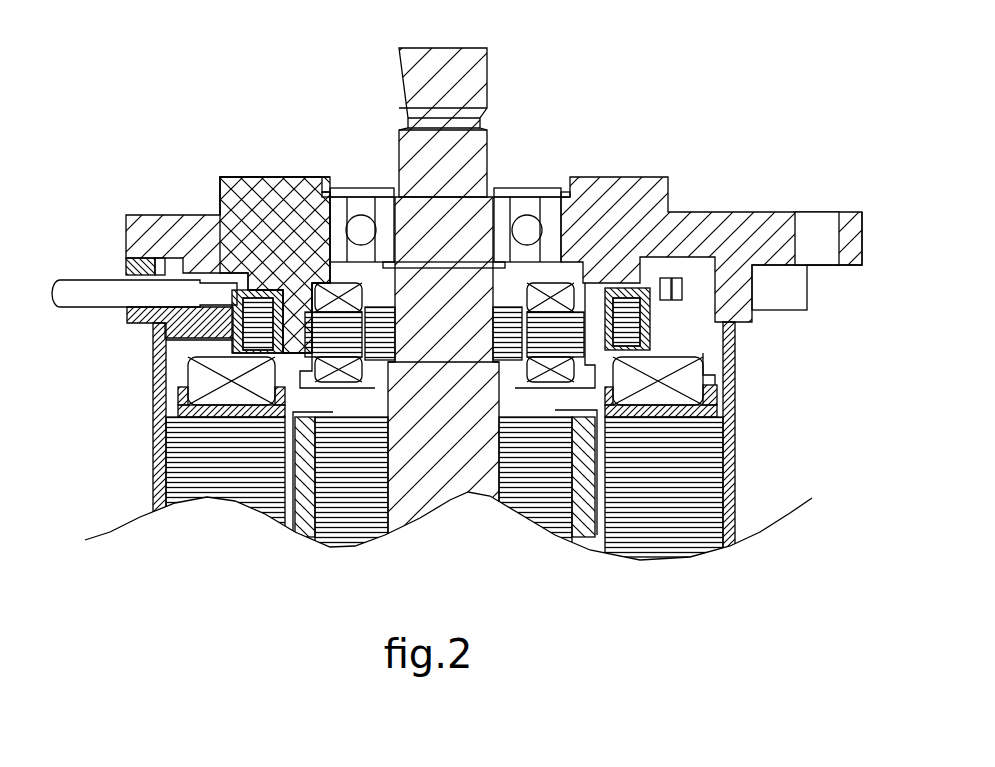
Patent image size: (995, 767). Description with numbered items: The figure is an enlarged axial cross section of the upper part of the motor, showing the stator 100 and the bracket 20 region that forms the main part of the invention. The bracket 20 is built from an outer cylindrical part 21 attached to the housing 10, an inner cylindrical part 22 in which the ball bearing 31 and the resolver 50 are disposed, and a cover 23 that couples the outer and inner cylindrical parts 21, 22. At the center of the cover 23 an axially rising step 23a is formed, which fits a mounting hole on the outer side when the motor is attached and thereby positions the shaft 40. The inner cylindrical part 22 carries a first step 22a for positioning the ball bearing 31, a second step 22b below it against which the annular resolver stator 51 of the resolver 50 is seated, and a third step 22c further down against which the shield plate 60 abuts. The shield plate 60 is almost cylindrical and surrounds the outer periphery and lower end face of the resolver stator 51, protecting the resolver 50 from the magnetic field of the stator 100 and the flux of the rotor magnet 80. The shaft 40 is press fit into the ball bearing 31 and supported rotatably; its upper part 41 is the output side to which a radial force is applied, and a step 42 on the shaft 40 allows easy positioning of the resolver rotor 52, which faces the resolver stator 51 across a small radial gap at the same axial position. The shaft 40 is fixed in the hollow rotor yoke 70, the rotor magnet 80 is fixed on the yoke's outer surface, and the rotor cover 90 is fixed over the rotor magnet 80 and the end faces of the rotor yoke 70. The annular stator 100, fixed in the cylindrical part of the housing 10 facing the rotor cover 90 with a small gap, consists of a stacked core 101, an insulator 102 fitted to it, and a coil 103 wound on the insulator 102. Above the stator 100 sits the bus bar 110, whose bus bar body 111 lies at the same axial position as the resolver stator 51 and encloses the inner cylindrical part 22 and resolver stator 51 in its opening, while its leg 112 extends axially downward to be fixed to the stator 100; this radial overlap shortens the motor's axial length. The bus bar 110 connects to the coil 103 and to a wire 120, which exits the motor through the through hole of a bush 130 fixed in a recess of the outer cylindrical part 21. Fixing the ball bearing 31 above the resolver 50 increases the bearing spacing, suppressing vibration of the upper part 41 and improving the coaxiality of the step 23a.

The housing 10 is at (735, 482).
The bracket 20 is at (452, 205).
The outer cylindrical part 21 is at (732, 288).
The inner cylindrical part 22 is at (452, 205).
The first step 22a is at (343, 268).
The second step 22b is at (337, 297).
The third step 22c is at (293, 367).
The cover 23 is at (305, 307).
The step 23a is at (262, 195).
The ball bearing 31 is at (507, 192).
The shaft 40 is at (460, 398).
The upper part 41 is at (457, 82).
The step 42 is at (440, 410).
The resolver 50 is at (373, 285).
The resolver stator 51 is at (228, 233).
The resolver rotor 52 is at (555, 255).
The shield plate 60 is at (528, 392).
The rotor yoke 70 is at (355, 540).
The rotor magnet 80 is at (307, 523).
The rotor cover 90 is at (292, 515).
The stator 100 is at (445, 457).
The stacked core 101 is at (207, 463).
The insulator 102 is at (180, 410).
The coil 103 is at (200, 387).
The bus bar 110 is at (672, 305).
The bus bar body 111 is at (723, 263).
The leg 112 is at (718, 375).
The wire 120 is at (105, 292).
The bush 130 is at (150, 337).